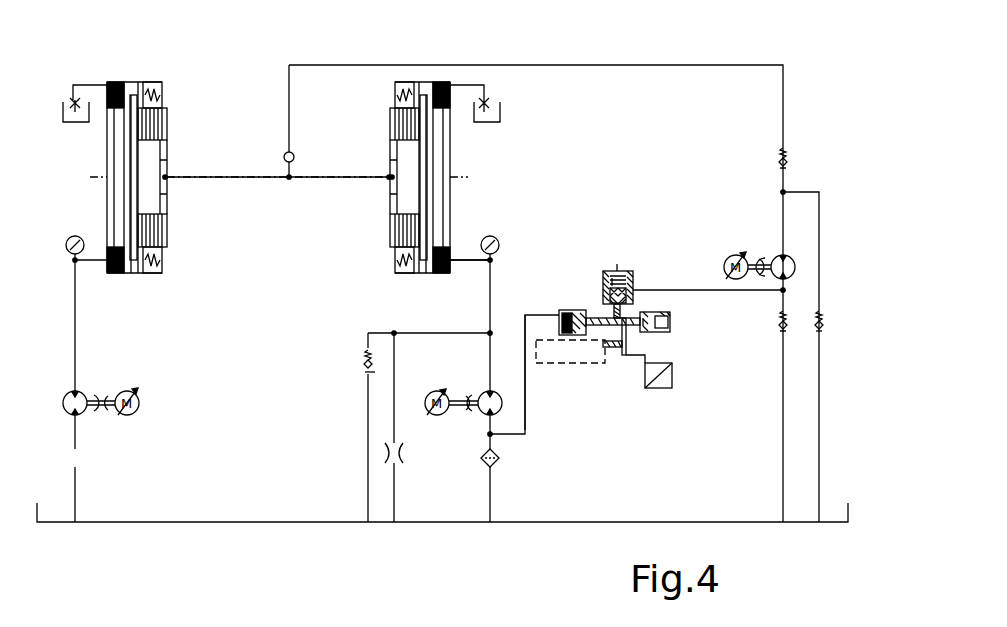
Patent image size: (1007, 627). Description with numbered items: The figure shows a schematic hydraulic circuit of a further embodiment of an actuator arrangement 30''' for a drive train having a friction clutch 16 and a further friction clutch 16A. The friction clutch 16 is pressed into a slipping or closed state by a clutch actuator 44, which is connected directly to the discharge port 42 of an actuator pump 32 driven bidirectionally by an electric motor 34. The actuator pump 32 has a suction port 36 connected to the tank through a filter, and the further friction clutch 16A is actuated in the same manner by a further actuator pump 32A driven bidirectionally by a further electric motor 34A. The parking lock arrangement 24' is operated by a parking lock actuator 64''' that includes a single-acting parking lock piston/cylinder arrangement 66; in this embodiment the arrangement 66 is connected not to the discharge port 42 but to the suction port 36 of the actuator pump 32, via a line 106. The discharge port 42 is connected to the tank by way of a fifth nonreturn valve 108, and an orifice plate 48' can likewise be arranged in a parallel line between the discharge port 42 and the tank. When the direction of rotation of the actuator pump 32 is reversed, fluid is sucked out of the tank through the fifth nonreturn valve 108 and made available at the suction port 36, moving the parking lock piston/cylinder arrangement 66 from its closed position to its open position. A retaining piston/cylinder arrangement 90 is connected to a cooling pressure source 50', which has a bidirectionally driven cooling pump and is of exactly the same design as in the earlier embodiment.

The further friction clutch 16A is at (162, 129).
The friction clutch 16 is at (390, 126).
The actuator arrangement 30''' is at (829, 31).
The cooling pressure source 50' is at (824, 310).
The parking lock arrangement 24' is at (676, 198).
The control line 106 is at (537, 314).
The retaining piston/cylinder arrangement 90 is at (633, 290).
The clutch actuator 44 is at (440, 274).
The fifth nonreturn valve 108 is at (364, 356).
The further actuator pump 32A is at (85, 393).
The further electric motor 34A is at (140, 401).
The discharge port 42 is at (488, 391).
The parking lock piston/cylinder arrangement 66 is at (664, 341).
The orifice plate 48' is at (341, 458).
The electric motor 34 is at (437, 414).
The actuator pump 32 is at (503, 397).
The suction port 36 is at (493, 414).
The parking lock actuator 64''' is at (618, 398).